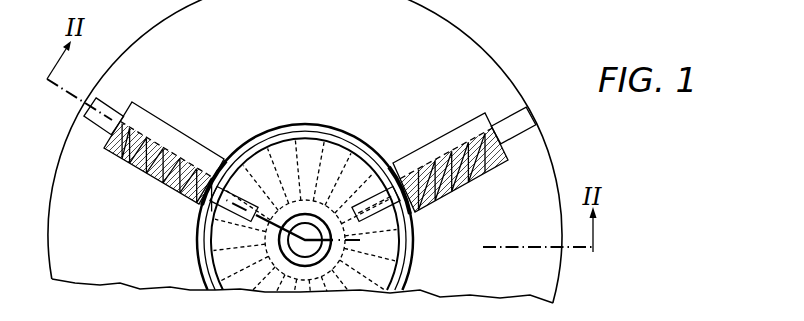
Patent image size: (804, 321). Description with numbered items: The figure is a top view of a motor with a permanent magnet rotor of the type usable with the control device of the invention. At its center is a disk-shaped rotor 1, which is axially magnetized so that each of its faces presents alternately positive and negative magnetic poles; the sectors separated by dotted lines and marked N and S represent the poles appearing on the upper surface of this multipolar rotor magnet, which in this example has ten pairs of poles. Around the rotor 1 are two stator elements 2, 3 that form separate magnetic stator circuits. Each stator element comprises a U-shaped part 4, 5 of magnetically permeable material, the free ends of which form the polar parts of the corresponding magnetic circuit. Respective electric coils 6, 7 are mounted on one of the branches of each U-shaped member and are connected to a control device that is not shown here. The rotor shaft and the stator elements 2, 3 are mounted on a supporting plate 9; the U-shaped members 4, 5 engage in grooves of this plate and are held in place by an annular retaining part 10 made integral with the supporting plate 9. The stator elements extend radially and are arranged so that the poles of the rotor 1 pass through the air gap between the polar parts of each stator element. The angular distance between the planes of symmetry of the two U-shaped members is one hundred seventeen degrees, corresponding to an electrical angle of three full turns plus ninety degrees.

The rotor 1 is at (322, 143).
The stator element 2 is at (180, 124).
The stator element 3 is at (424, 132).
The U-shaped part 4 is at (110, 108).
The U-shaped part 5 is at (507, 127).
The electric coil 6 is at (148, 175).
The electric coil 7 is at (463, 187).
The supporting plate 9 is at (323, 52).
The annular retaining part 10 is at (410, 270).